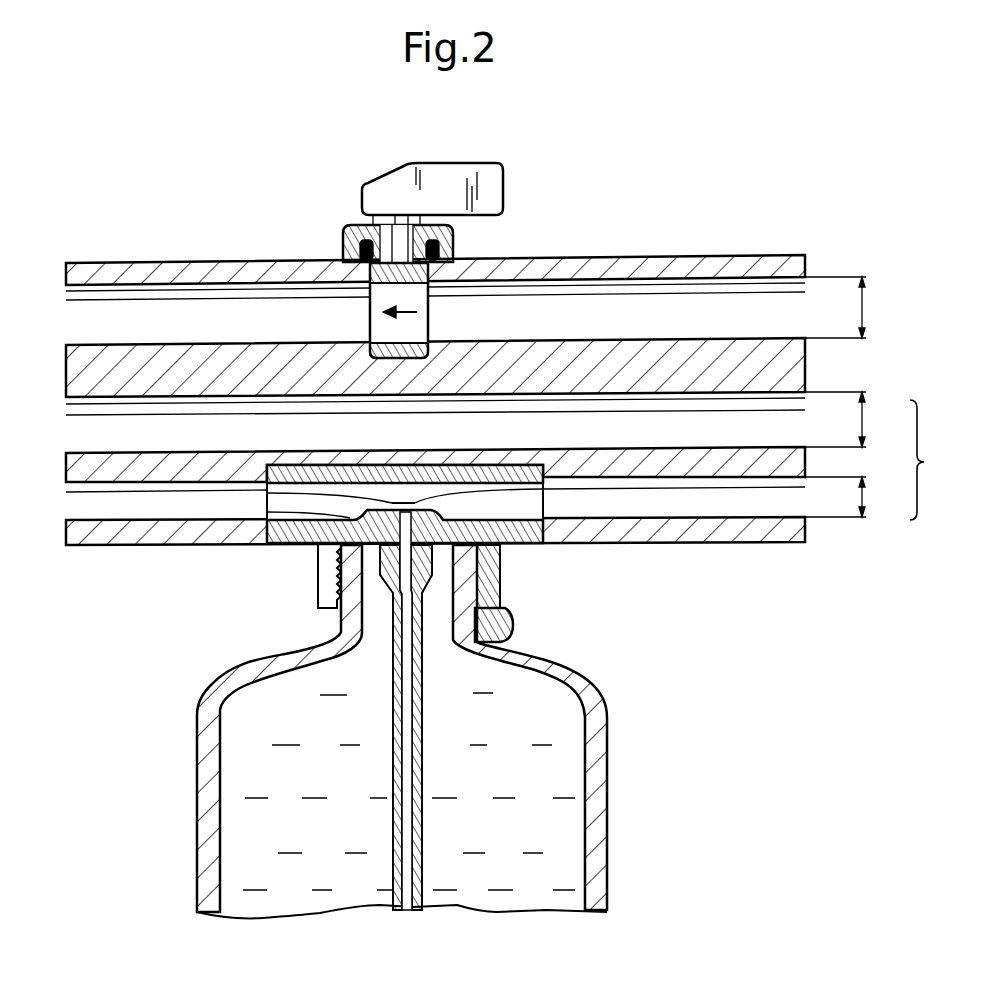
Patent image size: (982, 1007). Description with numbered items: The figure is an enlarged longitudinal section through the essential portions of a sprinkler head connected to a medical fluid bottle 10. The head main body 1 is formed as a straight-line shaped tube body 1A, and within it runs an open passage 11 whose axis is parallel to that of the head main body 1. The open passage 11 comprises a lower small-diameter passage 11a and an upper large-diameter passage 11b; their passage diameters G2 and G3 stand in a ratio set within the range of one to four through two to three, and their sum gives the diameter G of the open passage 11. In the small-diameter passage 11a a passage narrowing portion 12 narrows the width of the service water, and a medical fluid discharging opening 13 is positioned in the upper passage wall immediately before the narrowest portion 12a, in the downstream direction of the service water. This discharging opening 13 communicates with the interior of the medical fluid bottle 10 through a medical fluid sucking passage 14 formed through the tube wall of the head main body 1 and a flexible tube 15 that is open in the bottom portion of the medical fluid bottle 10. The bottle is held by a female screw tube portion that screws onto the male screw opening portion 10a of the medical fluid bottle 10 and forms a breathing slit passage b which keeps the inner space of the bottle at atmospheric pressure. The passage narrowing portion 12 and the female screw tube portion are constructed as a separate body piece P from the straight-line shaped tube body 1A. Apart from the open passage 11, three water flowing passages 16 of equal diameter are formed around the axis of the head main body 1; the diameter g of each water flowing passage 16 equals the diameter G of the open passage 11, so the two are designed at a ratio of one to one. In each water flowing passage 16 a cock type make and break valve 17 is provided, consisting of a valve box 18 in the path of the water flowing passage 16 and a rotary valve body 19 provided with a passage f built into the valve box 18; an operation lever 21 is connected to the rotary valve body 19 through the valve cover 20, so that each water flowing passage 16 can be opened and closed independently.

The head main body 1 is at (636, 252).
The straight-line shaped tube body 1A is at (183, 262).
The water flowing passage 16 is at (758, 307).
The open passage 11 is at (775, 608).
The lower small-diameter passage 11a is at (662, 545).
The upper large-diameter passage 11b is at (723, 432).
The passage narrowing portion 12 is at (455, 505).
The narrowest portion 12a is at (360, 508).
The separate body piece P is at (300, 515).
The medical fluid discharging opening 13 is at (410, 505).
The breathing slit passage b is at (316, 592).
The medical fluid bottle 10 is at (236, 662).
The male screw opening portion 10a is at (507, 615).
The medical fluid sucking passage 14 is at (392, 628).
The flexible tube 15 is at (422, 678).
The cock type make and break valve 17 is at (386, 166).
The valve box 18 is at (367, 356).
The rotary valve body 19 is at (372, 340).
The valve cover 20 is at (455, 238).
The operation lever 21 is at (503, 170).
The passage f is at (417, 312).
The diameter of water flowing passage g is at (845, 307).
The passage diameter of large-diameter passage G3 is at (856, 419).
The passage diameter of small-diameter passage G2 is at (856, 497).
The diameter of open passage G is at (930, 460).